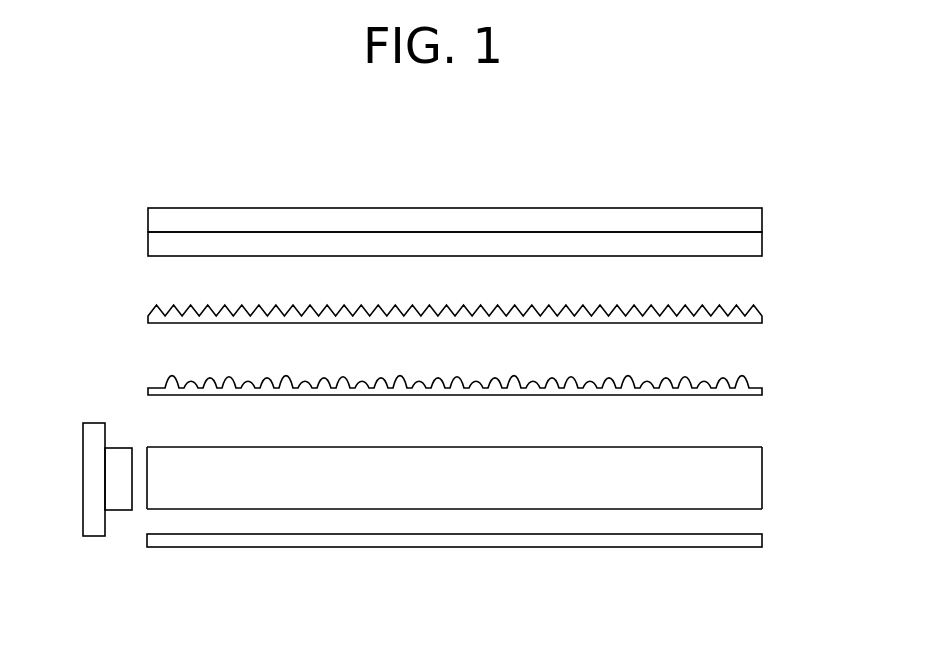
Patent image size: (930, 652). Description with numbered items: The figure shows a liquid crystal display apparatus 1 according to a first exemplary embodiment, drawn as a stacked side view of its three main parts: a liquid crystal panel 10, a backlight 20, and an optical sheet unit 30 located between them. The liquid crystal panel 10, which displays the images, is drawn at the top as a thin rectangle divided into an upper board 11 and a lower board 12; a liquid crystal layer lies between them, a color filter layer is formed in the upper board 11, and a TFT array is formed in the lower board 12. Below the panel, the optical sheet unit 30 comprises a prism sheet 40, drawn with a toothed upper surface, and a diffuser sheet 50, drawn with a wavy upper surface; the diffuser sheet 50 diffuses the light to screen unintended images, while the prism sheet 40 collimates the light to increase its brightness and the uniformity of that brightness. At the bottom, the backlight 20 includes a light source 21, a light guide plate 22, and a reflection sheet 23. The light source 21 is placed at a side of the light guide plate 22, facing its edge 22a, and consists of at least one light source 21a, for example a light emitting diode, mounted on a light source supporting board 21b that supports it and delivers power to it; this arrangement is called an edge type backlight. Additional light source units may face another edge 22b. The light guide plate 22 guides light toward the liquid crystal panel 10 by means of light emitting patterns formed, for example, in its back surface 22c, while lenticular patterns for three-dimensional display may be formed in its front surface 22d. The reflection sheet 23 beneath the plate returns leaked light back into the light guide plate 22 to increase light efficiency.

The liquid crystal display apparatus 1 is at (434, 146).
The liquid crystal panel 10 is at (447, 229).
The upper board 11 is at (763, 217).
The lower board 12 is at (763, 242).
The backlight 20 is at (421, 505).
The light source 21 is at (82, 504).
The light source 21a is at (124, 509).
The light source supporting board 21b is at (90, 535).
The light guide plate 22 is at (448, 505).
The edge 22a is at (146, 478).
The another edge 22b is at (767, 460).
The back surface 22c is at (455, 512).
The front surface 22d is at (453, 446).
The reflection sheet 23 is at (638, 547).
The optical sheet unit 30 is at (456, 352).
The prism sheet 40 is at (763, 319).
The diffuser sheet 50 is at (763, 391).